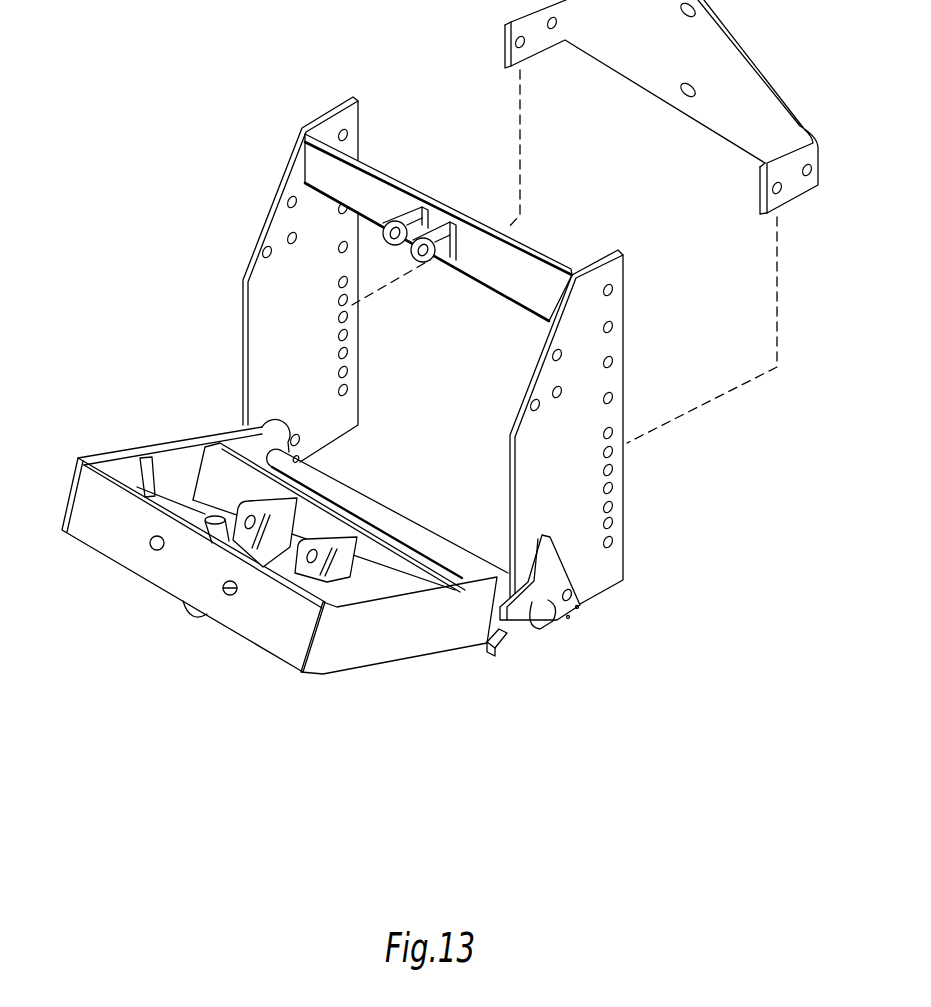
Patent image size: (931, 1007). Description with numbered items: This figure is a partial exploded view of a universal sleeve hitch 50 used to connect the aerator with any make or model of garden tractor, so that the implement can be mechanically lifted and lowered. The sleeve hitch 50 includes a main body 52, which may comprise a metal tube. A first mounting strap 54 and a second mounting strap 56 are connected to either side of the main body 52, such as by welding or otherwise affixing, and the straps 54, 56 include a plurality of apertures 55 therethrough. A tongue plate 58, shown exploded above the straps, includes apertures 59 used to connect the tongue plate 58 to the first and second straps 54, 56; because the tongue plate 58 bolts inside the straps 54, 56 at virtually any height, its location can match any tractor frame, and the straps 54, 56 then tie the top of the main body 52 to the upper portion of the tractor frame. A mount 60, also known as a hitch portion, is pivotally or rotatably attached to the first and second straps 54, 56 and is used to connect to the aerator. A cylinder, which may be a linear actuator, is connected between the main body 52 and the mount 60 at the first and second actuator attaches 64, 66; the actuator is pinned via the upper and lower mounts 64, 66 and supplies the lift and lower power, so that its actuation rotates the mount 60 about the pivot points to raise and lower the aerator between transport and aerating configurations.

The universal sleeve hitch 50 is at (238, 72).
The main body 52 is at (438, 227).
The first mounting strap 54 is at (589, 427).
The apertures 55 is at (608, 430).
The second mounting strap 56 is at (352, 122).
The tongue plate 58 is at (669, 221).
The apertures 59 is at (780, 190).
The mount 60 is at (321, 552).
The first actuator attach 64 is at (436, 257).
The second actuator attach 66 is at (333, 572).